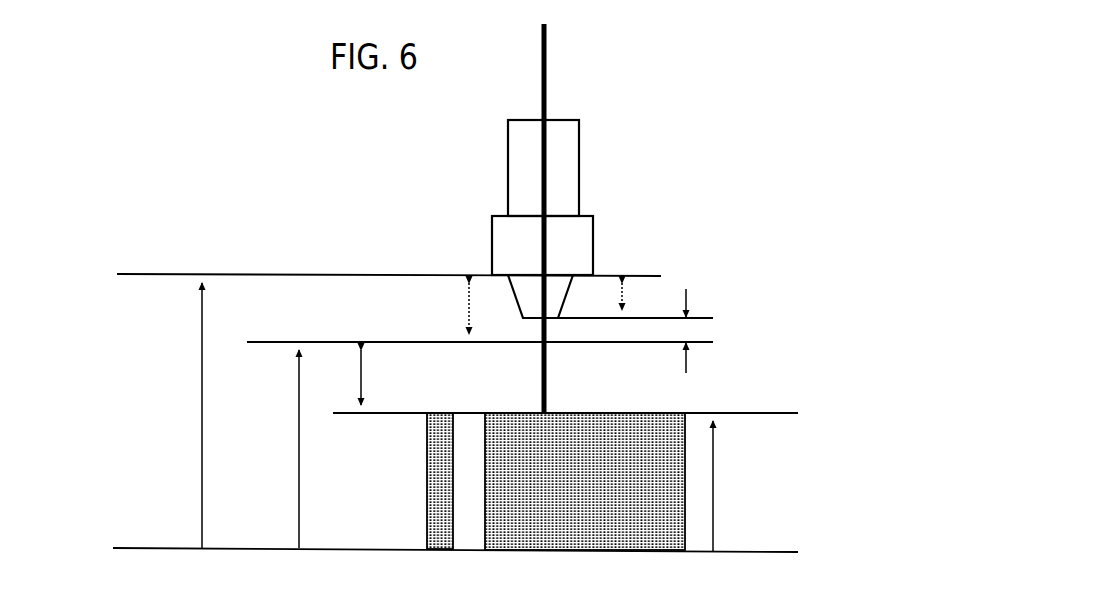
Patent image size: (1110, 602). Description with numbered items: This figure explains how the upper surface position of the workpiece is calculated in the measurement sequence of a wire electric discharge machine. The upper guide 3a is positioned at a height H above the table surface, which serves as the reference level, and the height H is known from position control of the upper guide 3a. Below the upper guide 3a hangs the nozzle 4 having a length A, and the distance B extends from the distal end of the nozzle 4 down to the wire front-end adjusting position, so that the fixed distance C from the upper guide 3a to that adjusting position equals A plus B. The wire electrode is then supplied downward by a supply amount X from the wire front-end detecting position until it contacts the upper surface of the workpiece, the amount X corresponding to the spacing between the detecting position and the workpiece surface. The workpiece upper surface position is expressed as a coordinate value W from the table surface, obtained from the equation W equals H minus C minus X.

The nozzle 4 is at (528, 284).
The upper guide 3a is at (575, 248).
The height of the upper guide H is at (180, 415).
The supply amount of the wire electrode X is at (377, 377).
The distance from the upper guide to the wire front-end adjusting position C is at (449, 308).
The length of the nozzle A is at (636, 298).
The distance between the distal end of the nozzle and the wire front-end adjusting p B is at (696, 331).
The coordinate value of the workpiece upper surface position W is at (732, 486).